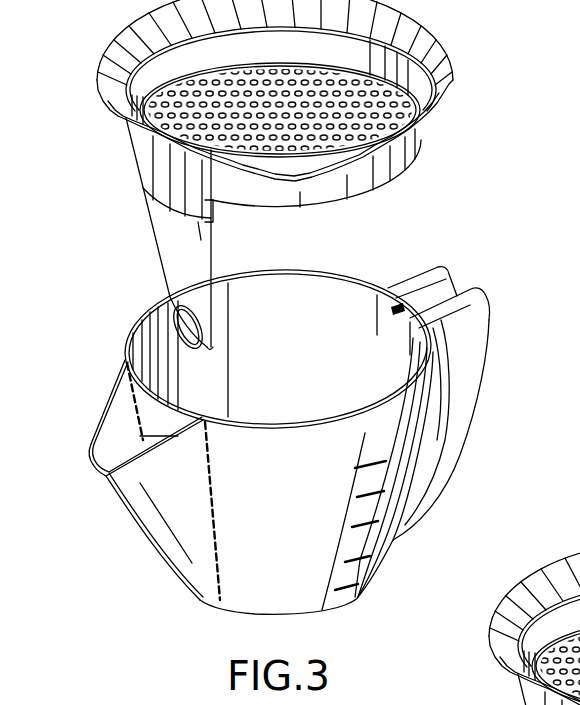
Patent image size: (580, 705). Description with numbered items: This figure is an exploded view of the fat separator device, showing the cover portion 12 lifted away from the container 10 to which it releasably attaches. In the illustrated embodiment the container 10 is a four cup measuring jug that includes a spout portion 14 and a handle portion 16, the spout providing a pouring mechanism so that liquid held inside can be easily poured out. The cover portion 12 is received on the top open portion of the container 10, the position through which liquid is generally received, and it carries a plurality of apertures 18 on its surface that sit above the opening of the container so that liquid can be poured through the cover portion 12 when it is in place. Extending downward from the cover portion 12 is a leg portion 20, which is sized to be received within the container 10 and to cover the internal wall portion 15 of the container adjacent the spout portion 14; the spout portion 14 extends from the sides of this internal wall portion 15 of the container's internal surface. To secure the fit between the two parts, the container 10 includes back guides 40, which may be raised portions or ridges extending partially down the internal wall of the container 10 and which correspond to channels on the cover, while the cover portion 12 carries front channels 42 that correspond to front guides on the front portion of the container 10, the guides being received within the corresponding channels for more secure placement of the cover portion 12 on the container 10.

The container 10 is at (136, 545).
The cover portion 12 is at (464, 77).
The spout portion 14 is at (97, 429).
The internal wall portion 15 is at (146, 418).
The handle portion 16 is at (488, 346).
The apertures 18 is at (408, 116).
The leg portion 20 is at (152, 241).
The back guides 40 is at (410, 334).
The front channels 42 is at (209, 180).